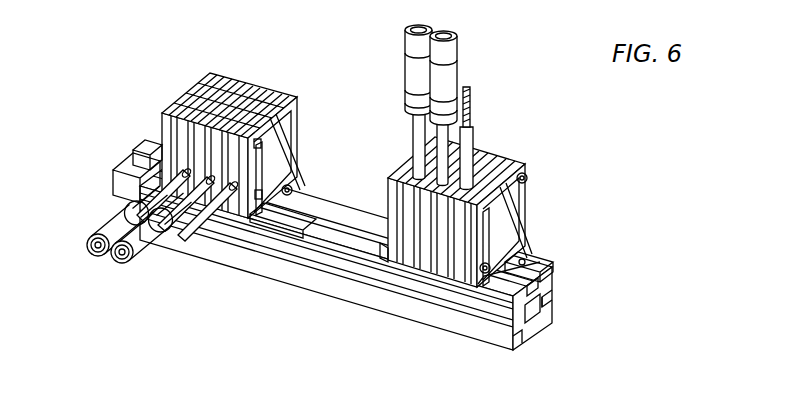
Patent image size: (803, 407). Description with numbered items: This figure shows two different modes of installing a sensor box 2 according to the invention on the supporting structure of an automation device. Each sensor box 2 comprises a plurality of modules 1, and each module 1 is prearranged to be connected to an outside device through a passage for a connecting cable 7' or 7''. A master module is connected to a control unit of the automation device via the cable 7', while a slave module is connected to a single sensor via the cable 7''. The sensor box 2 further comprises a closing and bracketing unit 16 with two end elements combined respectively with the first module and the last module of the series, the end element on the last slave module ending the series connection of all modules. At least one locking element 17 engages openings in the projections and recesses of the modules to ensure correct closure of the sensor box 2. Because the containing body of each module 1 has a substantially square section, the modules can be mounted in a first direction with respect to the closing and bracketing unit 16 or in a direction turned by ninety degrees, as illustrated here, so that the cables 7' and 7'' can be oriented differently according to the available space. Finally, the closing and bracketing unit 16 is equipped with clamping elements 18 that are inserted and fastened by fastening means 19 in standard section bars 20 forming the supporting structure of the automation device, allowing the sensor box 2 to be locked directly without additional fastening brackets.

The module 1 is at (503, 145).
The sensor box 2 is at (378, 140).
The connecting cable 7' is at (456, 100).
The connecting cable 7'' is at (138, 215).
The closing and bracketing unit 16 is at (473, 282).
The locking element 17 is at (527, 177).
The clamping element 18 is at (555, 287).
The fastening means 19 is at (518, 257).
The standard section bar 20 is at (317, 280).